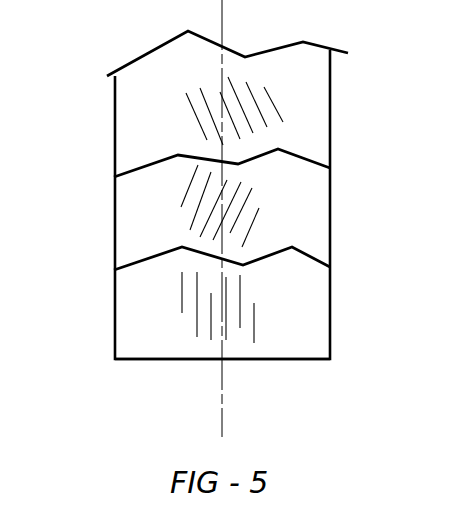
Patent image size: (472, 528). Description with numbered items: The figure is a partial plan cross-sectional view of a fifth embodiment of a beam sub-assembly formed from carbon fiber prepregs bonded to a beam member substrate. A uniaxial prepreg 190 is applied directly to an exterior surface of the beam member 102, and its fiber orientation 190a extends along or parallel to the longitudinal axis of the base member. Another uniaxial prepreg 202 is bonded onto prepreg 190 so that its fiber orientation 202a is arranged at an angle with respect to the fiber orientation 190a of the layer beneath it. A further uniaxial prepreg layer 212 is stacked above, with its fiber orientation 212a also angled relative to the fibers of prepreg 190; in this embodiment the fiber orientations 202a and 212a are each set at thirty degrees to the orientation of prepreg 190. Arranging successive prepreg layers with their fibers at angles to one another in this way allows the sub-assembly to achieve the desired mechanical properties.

The beam member 102 is at (167, 362).
The prepreg layer 212 is at (305, 92).
The fiber orientation 212a is at (207, 102).
The uniaxial prepreg 202 is at (317, 213).
The fiber orientation 202a is at (193, 214).
The prepreg 190 is at (308, 307).
The fiber orientation 190a is at (196, 303).